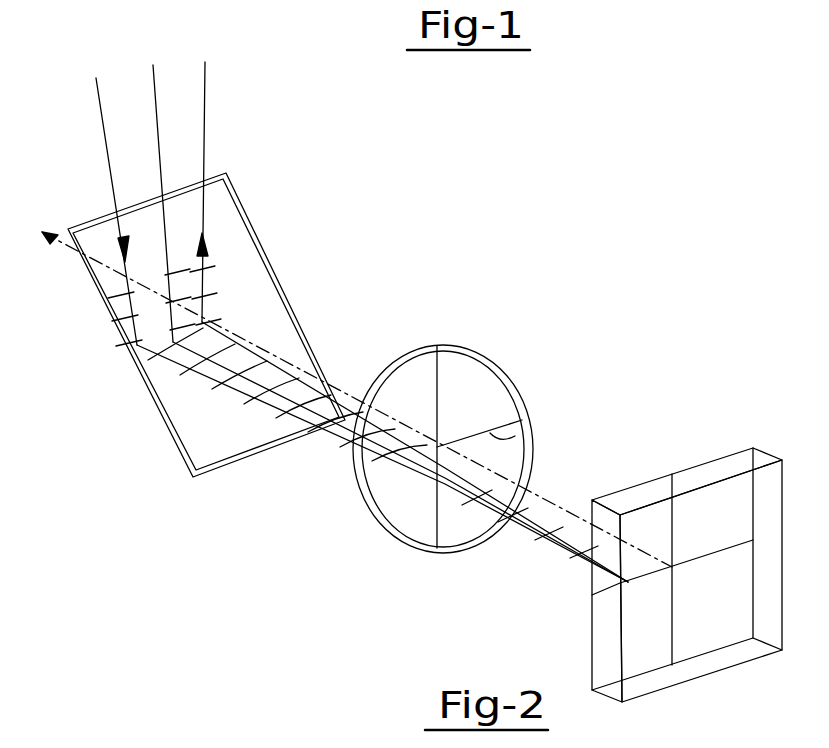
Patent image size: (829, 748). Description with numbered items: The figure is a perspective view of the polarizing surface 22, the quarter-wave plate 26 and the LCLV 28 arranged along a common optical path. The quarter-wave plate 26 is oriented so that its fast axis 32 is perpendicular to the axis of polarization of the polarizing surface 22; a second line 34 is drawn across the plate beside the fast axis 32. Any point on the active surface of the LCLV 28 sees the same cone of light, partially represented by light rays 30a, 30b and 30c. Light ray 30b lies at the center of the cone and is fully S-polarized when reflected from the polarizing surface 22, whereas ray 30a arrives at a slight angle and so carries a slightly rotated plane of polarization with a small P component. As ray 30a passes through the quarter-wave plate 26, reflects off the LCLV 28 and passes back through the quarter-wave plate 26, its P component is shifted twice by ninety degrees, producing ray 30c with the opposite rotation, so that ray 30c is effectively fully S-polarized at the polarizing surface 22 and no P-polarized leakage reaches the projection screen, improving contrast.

The polarizing surface 22 is at (233, 247).
The quarter-wave plate 26 is at (483, 352).
The LCLV 28 is at (743, 458).
The light ray 30a is at (107, 150).
The light ray 30b is at (153, 82).
The light ray 30c is at (205, 80).
The fast axis 32 is at (433, 380).
The lens radius line 34 is at (518, 438).